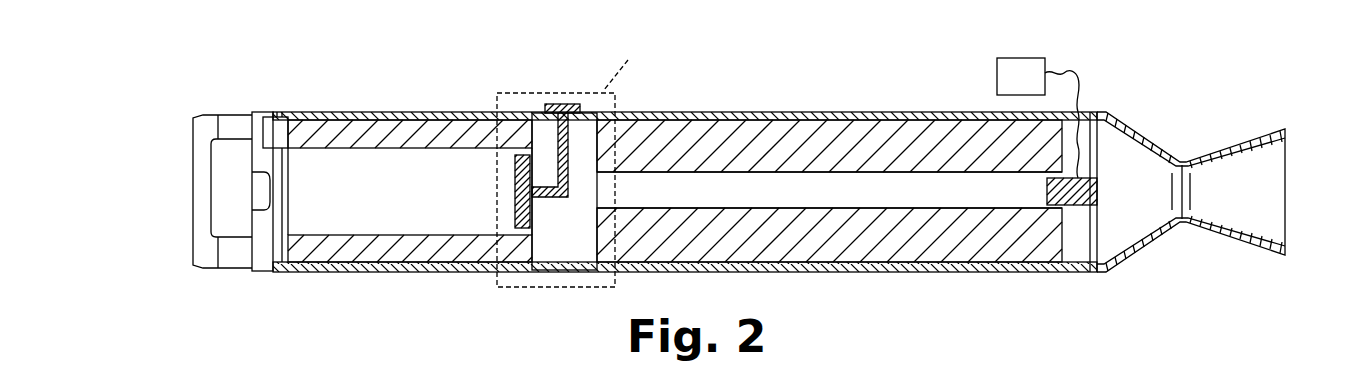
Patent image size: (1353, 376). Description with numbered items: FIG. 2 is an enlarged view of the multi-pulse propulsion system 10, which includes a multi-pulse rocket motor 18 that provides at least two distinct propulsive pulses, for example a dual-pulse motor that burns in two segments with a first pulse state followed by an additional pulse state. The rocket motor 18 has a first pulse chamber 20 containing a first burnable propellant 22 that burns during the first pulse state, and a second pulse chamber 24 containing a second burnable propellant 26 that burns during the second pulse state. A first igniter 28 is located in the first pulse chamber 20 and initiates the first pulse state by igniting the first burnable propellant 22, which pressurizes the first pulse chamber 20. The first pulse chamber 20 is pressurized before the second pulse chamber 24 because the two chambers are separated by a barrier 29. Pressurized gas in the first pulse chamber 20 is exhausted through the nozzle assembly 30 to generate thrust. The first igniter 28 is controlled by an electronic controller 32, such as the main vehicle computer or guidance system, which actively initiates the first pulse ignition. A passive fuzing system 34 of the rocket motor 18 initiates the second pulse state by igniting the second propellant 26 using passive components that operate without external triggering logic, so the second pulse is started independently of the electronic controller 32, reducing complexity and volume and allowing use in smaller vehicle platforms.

The propulsion system 10 is at (297, 70).
The multi-pulse rocket motor 18 is at (260, 102).
The first pulse chamber 20 is at (803, 188).
The first burnable propellant 22 is at (877, 140).
The second pulse chamber 24 is at (338, 172).
The second burnable propellant 26 is at (421, 132).
The first igniter 28 is at (1077, 200).
The barrier 29 is at (562, 245).
The nozzle assembly 30 is at (1163, 133).
The electronic controller 32 is at (1020, 78).
The passive fuzing system 34 is at (562, 100).